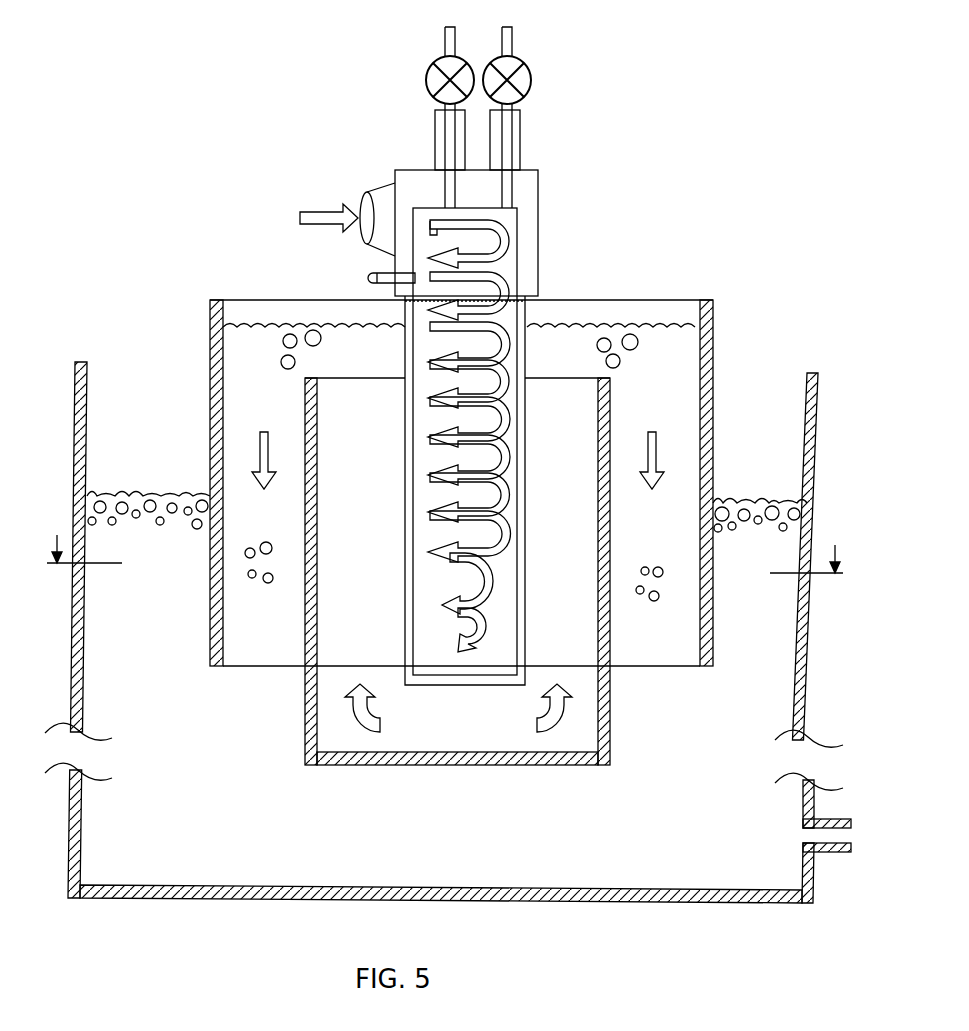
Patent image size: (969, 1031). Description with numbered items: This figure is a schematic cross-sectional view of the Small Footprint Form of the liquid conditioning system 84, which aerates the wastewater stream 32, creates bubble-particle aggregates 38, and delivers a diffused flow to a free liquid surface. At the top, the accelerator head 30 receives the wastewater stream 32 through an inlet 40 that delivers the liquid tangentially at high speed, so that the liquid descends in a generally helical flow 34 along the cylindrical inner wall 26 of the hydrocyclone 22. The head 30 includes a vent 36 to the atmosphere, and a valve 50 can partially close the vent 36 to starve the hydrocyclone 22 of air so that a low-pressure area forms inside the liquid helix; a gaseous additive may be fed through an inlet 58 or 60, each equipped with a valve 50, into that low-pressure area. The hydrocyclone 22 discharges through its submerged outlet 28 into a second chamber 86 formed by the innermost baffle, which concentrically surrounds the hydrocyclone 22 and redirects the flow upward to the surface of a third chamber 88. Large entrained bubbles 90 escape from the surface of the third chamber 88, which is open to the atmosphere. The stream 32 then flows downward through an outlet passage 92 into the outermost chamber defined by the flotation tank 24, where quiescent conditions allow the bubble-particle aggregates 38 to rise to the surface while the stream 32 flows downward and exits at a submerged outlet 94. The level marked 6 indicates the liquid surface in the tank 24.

The liquid conditioning system 84 is at (280, 88).
The valve 50 is at (430, 62).
The vent 36 is at (437, 142).
The inlet 60 is at (520, 142).
The inlet 40 is at (428, 219).
The accelerator head 30 is at (544, 232).
The wastewater stream 32 is at (302, 212).
The inlet 58 is at (368, 278).
The helical flow 34 is at (495, 291).
The large entrained bubbles 90 is at (313, 330).
The outlet passage 92 is at (672, 440).
The hydrocyclone 22 is at (407, 442).
The cylindrical inner wall 26 is at (407, 530).
The bubble-particle aggregates 38 is at (122, 497).
The third chamber 88 is at (210, 577).
The outlet 28 is at (258, 582).
The liquid level 6 is at (445, 541).
The flotation tank 24 is at (77, 652).
The second chamber 86 is at (305, 718).
The submerged outlet 94 is at (826, 853).